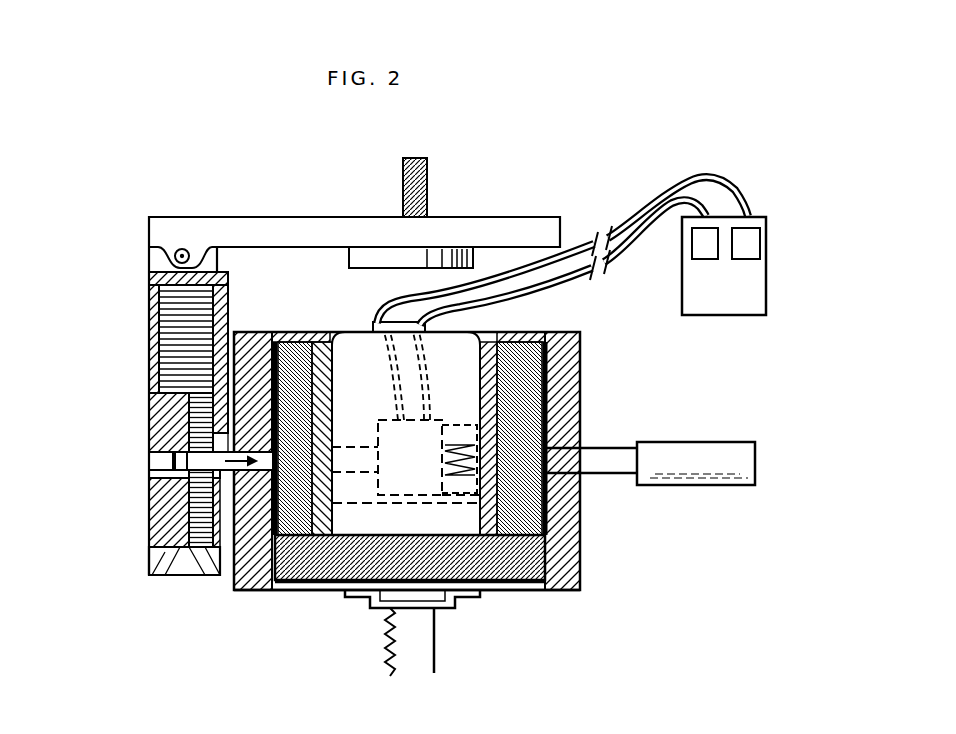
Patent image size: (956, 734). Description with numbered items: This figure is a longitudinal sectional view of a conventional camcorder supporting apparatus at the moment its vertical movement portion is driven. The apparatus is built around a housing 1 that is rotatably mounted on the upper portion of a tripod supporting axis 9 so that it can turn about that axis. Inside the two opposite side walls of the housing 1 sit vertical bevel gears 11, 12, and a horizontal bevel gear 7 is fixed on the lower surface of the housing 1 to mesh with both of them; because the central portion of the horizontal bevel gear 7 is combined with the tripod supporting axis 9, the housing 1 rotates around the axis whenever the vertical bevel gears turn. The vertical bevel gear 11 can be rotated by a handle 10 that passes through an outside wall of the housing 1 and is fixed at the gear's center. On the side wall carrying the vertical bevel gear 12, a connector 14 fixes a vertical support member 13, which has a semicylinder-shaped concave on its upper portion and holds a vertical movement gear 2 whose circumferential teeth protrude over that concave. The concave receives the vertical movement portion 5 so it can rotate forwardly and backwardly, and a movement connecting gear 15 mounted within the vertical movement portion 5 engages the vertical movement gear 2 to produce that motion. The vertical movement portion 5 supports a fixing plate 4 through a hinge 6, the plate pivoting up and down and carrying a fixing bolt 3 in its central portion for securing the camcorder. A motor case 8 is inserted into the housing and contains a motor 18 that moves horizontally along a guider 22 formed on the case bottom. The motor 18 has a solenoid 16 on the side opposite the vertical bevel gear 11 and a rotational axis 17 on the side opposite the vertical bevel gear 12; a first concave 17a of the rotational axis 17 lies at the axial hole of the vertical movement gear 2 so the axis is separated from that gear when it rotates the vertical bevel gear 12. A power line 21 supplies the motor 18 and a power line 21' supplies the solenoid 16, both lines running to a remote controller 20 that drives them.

The housing 1 is at (580, 372).
The vertical movement gear 2 is at (150, 562).
The fixing bolt 3 is at (428, 180).
The fixing plate 4 is at (150, 232).
The vertical movement portion 5 is at (150, 285).
The hinge 6 is at (185, 249).
The horizontal bevel gear 7 is at (360, 590).
The motor case 8 is at (512, 590).
The tripod supporting axis 9 is at (434, 655).
The handle 10 is at (720, 445).
The vertical bevel gear 11 is at (515, 515).
The vertical bevel gear 12 is at (255, 588).
The vertical support member 13 is at (150, 423).
The connector 14 is at (223, 480).
The movement connecting gear 15 is at (150, 363).
The solenoid 16 is at (455, 425).
The rotational axis 17 is at (173, 460).
The first concave 17a is at (152, 507).
The motor 18 is at (378, 412).
The remote controller 20 is at (760, 216).
The power line 21 is at (562, 238).
The power line 21' is at (563, 271).
The guider 22 is at (358, 503).